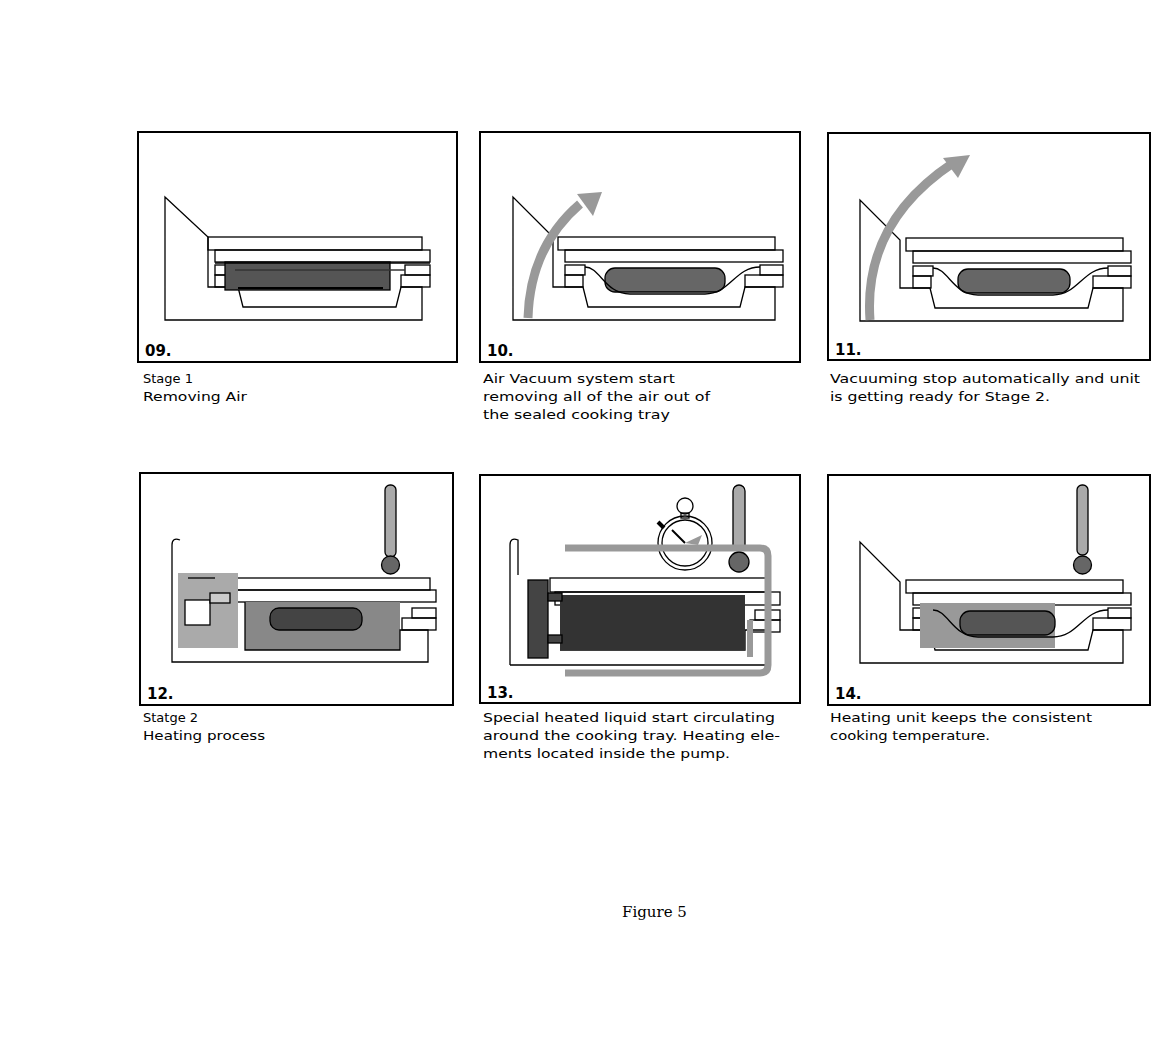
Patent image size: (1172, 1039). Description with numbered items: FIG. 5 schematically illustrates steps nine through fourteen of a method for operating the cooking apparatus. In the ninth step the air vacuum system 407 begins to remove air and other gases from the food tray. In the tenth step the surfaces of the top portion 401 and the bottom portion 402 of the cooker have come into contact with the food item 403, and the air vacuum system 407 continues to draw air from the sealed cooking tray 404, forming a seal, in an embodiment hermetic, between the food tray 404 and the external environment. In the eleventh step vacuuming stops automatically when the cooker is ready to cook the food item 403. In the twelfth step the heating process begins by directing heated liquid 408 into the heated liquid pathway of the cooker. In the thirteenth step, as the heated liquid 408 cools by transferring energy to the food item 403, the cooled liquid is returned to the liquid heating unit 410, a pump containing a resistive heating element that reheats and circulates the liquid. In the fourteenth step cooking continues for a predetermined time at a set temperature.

The top portion 401 is at (648, 243).
The bottom portion 402 is at (730, 293).
The food item 403 is at (318, 270).
The sealed cooking tray 404 is at (372, 272).
The air vacuum system 407 is at (195, 298).
The heated liquid 408 is at (182, 606).
The liquid heating unit 410 is at (540, 588).